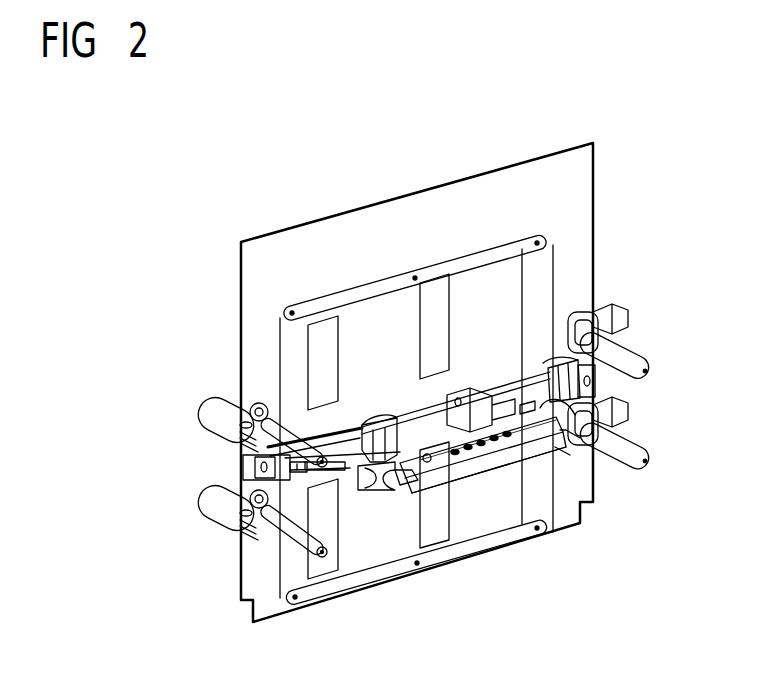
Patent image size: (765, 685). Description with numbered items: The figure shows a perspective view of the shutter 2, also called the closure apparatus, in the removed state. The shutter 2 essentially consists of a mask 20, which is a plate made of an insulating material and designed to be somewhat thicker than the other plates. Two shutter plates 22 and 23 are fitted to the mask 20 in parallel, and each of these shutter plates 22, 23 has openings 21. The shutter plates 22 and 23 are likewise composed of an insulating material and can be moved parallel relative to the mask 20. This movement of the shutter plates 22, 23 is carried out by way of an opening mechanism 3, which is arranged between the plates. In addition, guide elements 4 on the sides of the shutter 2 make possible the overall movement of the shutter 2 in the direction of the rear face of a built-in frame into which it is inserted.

The shutter 2 is at (198, 222).
The opening mechanism 3 is at (395, 400).
The guide elements 4 is at (207, 413).
The mask 20 is at (587, 165).
The openings 21 is at (323, 333).
The shutter plate 22 is at (513, 292).
The shutter plate 23 is at (545, 508).